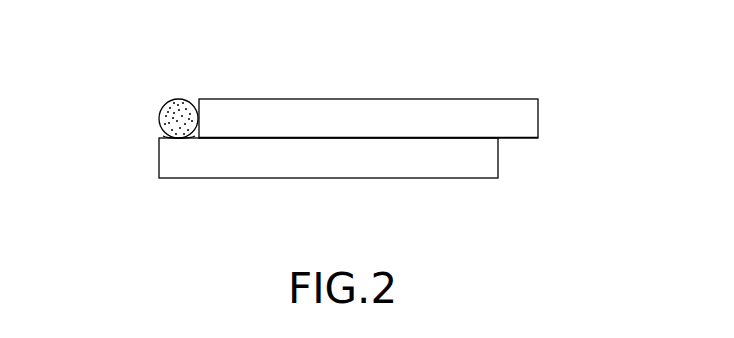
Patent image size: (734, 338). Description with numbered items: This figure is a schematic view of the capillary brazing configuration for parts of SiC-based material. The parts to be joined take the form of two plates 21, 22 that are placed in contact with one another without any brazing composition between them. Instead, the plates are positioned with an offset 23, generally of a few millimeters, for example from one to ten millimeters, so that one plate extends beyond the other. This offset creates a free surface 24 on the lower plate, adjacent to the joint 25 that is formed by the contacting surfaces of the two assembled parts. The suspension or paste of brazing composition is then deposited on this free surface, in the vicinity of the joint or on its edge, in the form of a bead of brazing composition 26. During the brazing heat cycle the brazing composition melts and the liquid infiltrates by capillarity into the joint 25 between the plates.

The plate 21 is at (523, 123).
The plate 22 is at (432, 167).
The offset 23 is at (535, 193).
The free surface 24 is at (181, 139).
The joint 25 is at (250, 138).
The bead of brazing composition 26 is at (158, 111).